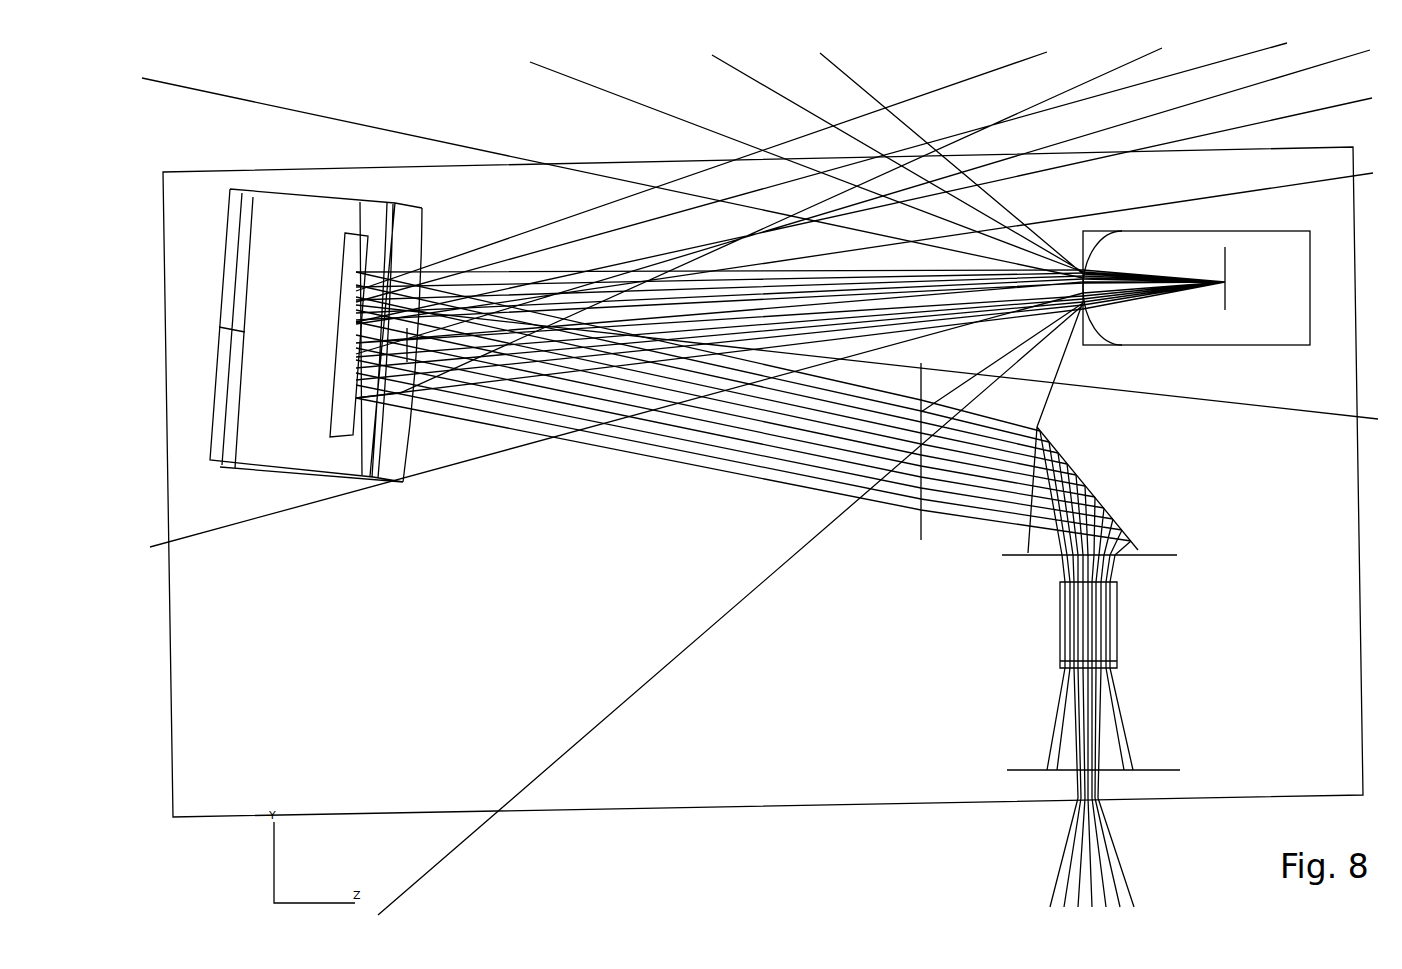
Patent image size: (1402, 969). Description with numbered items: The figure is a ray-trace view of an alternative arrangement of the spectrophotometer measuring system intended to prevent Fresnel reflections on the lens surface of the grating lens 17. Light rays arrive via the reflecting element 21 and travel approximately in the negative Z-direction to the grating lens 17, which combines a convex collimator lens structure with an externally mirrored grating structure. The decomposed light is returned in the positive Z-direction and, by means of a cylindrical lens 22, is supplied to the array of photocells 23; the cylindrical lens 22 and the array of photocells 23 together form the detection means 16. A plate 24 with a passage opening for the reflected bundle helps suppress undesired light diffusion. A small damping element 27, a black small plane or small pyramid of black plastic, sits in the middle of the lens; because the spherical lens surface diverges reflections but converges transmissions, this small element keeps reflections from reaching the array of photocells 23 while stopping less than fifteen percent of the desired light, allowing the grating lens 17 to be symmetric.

The grating lens 17 is at (283, 478).
The damping element 27 is at (415, 332).
The detection means 16 is at (1228, 345).
The array of photocells 23 is at (1227, 298).
The cylindrical lens 22 is at (1105, 342).
The plate 24 is at (921, 527).
The reflecting element 21 is at (1128, 532).